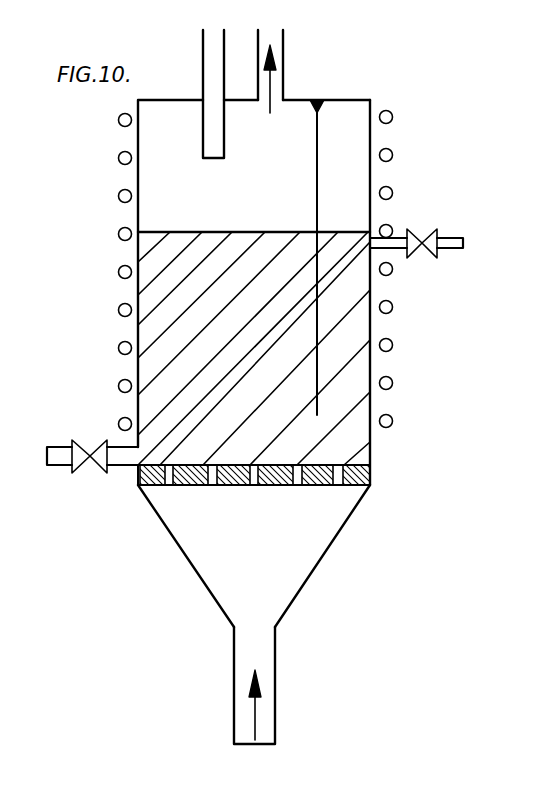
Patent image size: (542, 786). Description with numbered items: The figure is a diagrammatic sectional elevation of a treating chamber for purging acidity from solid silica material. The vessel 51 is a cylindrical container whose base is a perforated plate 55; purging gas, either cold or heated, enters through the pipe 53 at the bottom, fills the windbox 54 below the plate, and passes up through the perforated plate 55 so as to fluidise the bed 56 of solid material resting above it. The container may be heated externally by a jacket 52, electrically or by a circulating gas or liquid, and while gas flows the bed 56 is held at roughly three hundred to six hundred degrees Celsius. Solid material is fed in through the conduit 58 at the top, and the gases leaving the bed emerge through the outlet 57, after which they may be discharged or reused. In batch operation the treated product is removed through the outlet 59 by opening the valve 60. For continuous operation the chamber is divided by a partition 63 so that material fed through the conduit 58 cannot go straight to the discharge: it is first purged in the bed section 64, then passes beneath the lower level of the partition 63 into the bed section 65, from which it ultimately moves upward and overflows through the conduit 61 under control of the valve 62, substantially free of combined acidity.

The vessel 51 is at (240, 292).
The jacket 52 is at (393, 190).
The pipe 53 is at (232, 678).
The windbox 54 is at (318, 548).
The perforated plate 55 is at (365, 471).
The bed 56 is at (211, 337).
The outlet 57 is at (283, 78).
The conduit 58 is at (203, 48).
The outlet 59 is at (93, 488).
The valve 60 is at (88, 473).
The conduit 61 is at (423, 254).
The valve 62 is at (422, 252).
The partition 63 is at (318, 143).
The bed section 64 is at (172, 272).
The bed section 65 is at (355, 371).